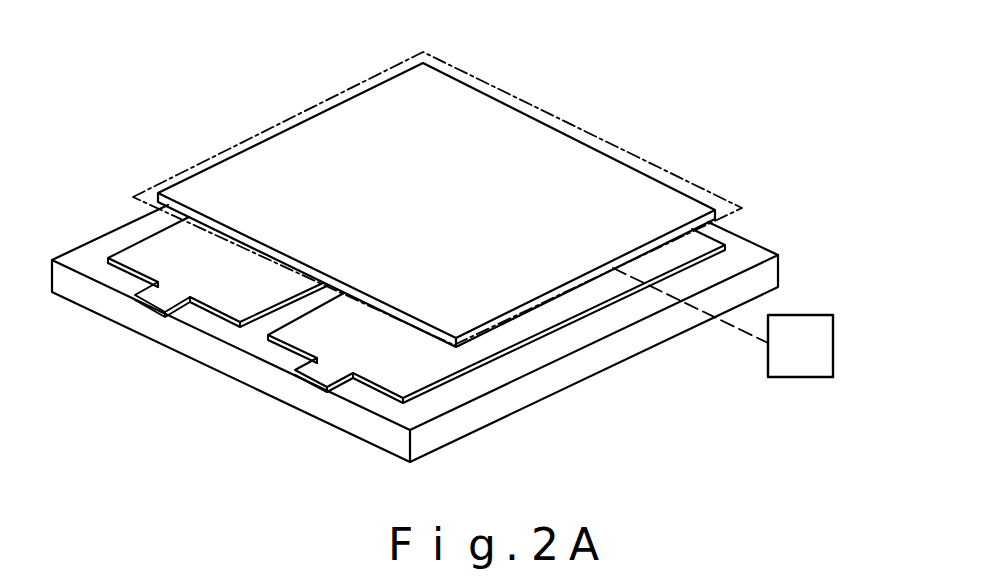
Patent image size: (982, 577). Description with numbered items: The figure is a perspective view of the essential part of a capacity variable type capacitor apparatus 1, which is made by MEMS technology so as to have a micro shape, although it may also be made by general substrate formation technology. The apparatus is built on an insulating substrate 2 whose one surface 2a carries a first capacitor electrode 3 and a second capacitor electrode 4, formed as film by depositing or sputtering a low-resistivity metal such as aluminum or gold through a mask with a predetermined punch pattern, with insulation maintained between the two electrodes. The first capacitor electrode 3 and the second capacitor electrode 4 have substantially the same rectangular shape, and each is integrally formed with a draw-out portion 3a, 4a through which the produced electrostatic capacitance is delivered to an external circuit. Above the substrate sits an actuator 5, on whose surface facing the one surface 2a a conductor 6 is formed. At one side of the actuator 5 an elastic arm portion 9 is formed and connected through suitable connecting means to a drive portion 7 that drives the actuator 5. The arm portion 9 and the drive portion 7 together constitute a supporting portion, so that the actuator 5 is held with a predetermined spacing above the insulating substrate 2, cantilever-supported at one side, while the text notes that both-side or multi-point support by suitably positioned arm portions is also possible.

The capacitor apparatus 1 is at (234, 99).
The insulating substrate 2 is at (87, 297).
The one surface 2a is at (90, 248).
The first capacitor electrode 3 is at (215, 295).
The draw-out portion 3a is at (155, 295).
The second capacitor electrode 4 is at (380, 370).
The draw-out portion 4a is at (312, 372).
The actuator 5 is at (569, 122).
The conductor 6 is at (500, 125).
The drive portion 7 is at (835, 333).
The arm portion 9 is at (716, 330).